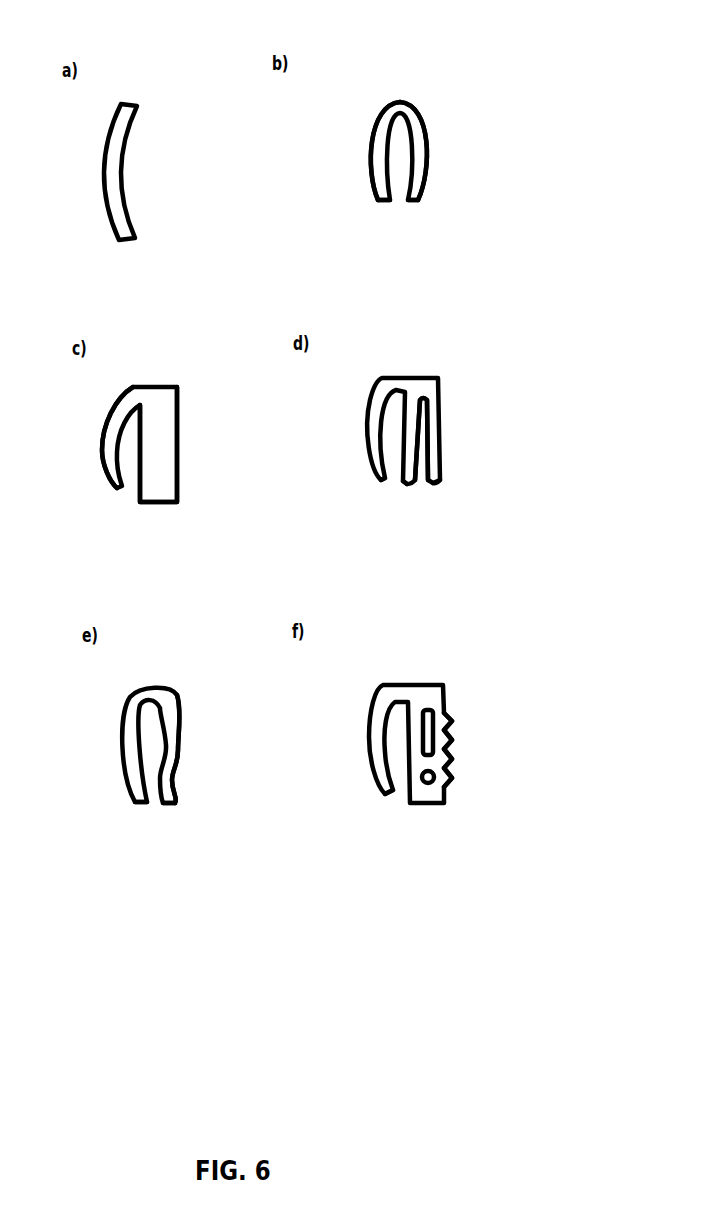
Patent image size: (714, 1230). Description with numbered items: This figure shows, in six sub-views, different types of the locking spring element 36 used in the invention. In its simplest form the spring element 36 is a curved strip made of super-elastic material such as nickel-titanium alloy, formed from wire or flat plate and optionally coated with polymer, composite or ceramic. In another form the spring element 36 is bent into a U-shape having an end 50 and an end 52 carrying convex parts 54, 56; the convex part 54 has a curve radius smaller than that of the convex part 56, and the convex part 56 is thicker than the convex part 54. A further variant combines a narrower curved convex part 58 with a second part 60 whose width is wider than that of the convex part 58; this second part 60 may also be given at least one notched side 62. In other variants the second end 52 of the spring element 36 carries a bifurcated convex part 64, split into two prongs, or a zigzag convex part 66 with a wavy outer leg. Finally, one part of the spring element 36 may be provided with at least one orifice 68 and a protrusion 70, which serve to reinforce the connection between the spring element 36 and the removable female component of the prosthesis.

The spring element 36 is at (133, 135).
The end 50 is at (383, 203).
The end 52 is at (418, 203).
The convex part 54 is at (372, 157).
The convex part 56 is at (430, 145).
The convex part 58 is at (112, 453).
The second part 60 is at (157, 437).
The notched side 62 is at (453, 752).
The bifurcated convex part 64 is at (416, 520).
The zigzag convex part 66 is at (178, 738).
The orifice 68 is at (450, 787).
The protrusion 70 is at (433, 712).